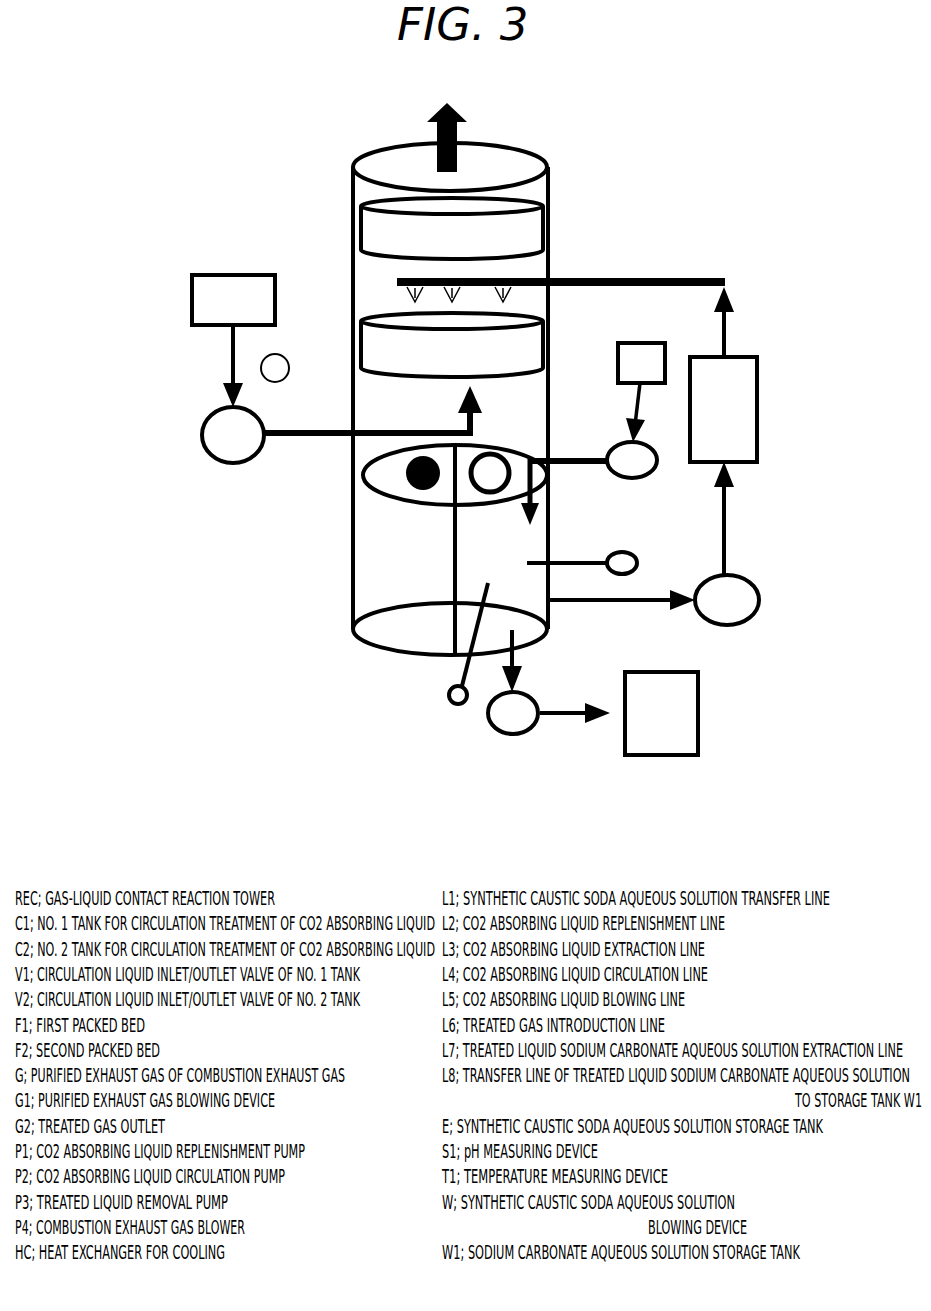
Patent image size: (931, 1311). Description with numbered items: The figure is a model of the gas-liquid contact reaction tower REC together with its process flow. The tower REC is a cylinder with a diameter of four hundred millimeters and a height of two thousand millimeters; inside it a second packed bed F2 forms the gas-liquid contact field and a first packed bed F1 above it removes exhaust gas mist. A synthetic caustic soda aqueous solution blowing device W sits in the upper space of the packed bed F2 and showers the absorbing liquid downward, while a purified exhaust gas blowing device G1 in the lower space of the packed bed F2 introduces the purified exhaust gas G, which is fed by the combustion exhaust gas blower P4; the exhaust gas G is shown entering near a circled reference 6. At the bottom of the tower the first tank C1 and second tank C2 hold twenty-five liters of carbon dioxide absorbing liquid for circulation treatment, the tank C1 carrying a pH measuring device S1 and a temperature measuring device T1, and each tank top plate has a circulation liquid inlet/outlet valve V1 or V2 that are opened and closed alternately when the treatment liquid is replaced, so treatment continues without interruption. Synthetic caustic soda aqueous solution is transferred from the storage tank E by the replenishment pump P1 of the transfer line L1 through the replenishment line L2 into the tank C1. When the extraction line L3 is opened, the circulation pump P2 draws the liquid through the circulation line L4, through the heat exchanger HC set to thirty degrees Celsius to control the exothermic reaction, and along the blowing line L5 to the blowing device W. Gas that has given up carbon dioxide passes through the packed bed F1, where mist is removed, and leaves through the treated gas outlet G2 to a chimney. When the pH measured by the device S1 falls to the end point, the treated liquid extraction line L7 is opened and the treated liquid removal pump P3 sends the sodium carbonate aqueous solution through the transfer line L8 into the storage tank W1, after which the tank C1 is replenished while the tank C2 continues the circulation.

The gas-liquid contact reaction tower REC is at (411, 399).
The No. 1 tank for circulation treatment of CO2 absorbing liquid C1 is at (538, 496).
The No. 2 tank for circulation treatment of CO2 absorbing liquid C2 is at (379, 550).
The circulation liquid inlet/outlet valve of No. 1 tank V1 is at (400, 488).
The circulation liquid inlet/outlet valve of No. 2 tank V2 is at (192, 528).
The first packed bed F1 is at (418, 228).
The second packed bed F2 is at (419, 345).
The purified exhaust gas of combustion exhaust gas G is at (233, 341).
The purified exhaust gas blowing device G1 is at (373, 436).
The treated gas outlet G2 is at (422, 137).
The CO2 absorbing liquid replenishment pump P1 is at (636, 478).
The CO2 absorbing liquid circulation pump P2 is at (716, 614).
The treated liquid removal pump P3 is at (491, 722).
The combustion exhaust gas blower P4 is at (214, 446).
The heat exchanger for cooling HC is at (723, 409).
The synthetic caustic soda aqueous solution transfer line L1 is at (615, 412).
The CO2 absorbing liquid replenishment line L2 is at (564, 472).
The CO2 absorbing liquid extraction line L3 is at (621, 622).
The CO2 absorbing liquid circulation line L4 is at (744, 518).
The CO2 absorbing liquid blowing line L5 is at (744, 322).
The treated liquid sodium carbonate aqueous solution extraction line L7 is at (536, 661).
The transfer line of treated liquid sodium carbonate aqueous solution to storage tan L8 is at (575, 728).
The synthetic caustic soda aqueous solution storage tank E is at (641, 363).
The pH measuring device S1 is at (602, 566).
The temperature measuring device T1 is at (447, 650).
The synthetic caustic soda aqueous solution blowing device W is at (561, 277).
The sodium carbonate aqueous solution storage tank W1 is at (661, 713).
The circled reference mark 6 is at (275, 368).